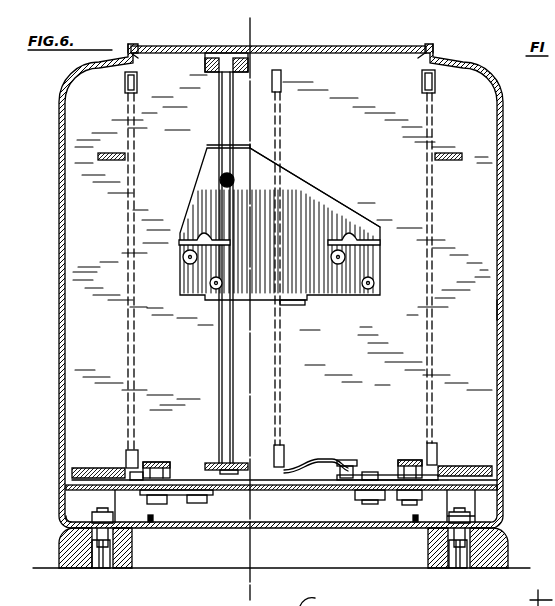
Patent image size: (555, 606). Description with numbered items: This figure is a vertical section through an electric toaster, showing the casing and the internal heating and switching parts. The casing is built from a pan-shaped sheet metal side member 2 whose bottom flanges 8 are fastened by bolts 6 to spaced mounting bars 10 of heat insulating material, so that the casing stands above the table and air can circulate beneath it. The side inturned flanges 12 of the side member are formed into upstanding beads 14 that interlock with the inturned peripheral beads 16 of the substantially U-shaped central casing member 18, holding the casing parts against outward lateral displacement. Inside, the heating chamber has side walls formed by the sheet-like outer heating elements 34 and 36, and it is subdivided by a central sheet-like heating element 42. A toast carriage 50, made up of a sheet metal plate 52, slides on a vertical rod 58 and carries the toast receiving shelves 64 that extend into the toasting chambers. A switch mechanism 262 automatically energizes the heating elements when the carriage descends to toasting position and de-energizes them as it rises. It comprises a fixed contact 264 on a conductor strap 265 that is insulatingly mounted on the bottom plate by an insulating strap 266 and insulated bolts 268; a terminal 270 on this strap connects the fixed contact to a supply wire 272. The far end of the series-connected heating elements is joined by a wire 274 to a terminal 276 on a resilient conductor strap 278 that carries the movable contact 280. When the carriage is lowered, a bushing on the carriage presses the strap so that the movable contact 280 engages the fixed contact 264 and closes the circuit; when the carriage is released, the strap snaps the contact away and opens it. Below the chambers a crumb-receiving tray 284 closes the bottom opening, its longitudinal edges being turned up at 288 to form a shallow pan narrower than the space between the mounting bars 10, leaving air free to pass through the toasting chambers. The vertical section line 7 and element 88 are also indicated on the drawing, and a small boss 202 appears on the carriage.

The side member 2 is at (503, 224).
The bolts 6 is at (101, 558).
The section line 7 is at (232, 27).
The bottom flanges 8 is at (72, 520).
The mounting bars 10 is at (120, 568).
The side inturned flanges 12 is at (96, 70).
The upstanding flanges or beads 14 is at (140, 60).
The inturned peripheral flanges or beads 16 is at (130, 52).
The central casing member 18 is at (301, 37).
The outer heating element 34 is at (128, 360).
The outer heating element 36 is at (430, 340).
The central heating element 42 is at (282, 344).
The toast carriage 50 is at (316, 166).
The sheet metal plate 52 is at (325, 212).
The rod 58 is at (222, 355).
The toast receiving shelves 64 is at (200, 233).
The base element 88 is at (315, 598).
The housing boss 202 is at (303, 305).
The switch mechanism 262 is at (309, 437).
The fixed contact 264 is at (367, 475).
The conductor strap 265 is at (385, 472).
The insulating strap 266 is at (296, 490).
The insulated bolts 268 is at (207, 504).
The terminal 270 is at (412, 460).
The supply wire 272 is at (458, 466).
The wire 274 is at (99, 468).
The terminal 276 is at (156, 462).
The resilient conductor strap 278 is at (182, 472).
The movable contact 280 is at (347, 460).
The crumb-receiving tray 284 is at (263, 528).
The upturned edges 288 is at (148, 522).